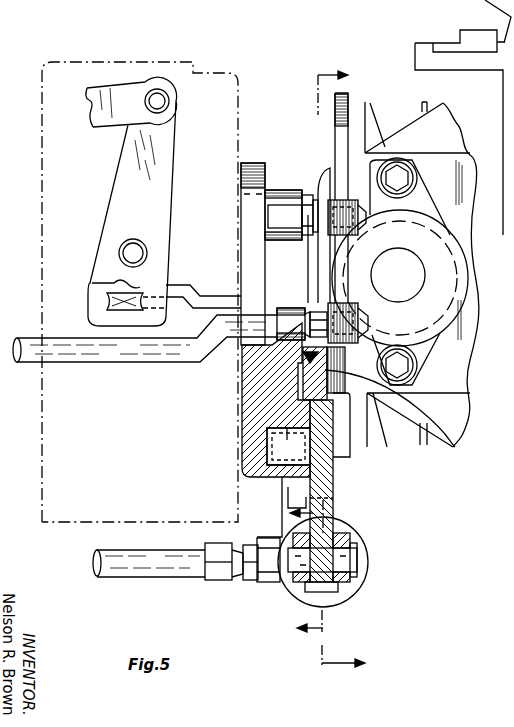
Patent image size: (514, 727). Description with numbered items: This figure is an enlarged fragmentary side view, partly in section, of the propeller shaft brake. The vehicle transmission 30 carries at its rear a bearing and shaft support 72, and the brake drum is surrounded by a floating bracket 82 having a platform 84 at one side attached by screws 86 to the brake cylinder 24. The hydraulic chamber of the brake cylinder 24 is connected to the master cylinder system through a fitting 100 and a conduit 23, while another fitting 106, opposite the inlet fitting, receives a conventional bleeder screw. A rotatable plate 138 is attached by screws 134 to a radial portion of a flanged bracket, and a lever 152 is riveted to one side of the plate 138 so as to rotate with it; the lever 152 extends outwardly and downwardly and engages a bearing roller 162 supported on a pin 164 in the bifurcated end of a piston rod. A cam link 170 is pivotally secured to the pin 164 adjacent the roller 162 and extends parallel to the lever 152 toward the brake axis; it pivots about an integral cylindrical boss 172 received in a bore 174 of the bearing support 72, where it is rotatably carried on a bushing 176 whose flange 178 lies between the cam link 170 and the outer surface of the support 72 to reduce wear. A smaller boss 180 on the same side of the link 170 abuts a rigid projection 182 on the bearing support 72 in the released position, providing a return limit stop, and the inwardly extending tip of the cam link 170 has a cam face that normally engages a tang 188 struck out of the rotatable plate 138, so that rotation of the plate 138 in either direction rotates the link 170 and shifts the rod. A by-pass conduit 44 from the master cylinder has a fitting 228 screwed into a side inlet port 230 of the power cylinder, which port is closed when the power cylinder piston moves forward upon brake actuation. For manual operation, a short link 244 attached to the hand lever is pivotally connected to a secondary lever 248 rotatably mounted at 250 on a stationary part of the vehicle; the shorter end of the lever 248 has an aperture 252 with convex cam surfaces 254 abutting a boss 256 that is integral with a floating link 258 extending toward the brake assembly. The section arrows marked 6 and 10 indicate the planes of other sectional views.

The section line 6- 6 is at (318, 569).
The section line 10- 10 is at (324, 371).
The conduit 23 is at (128, 352).
The brake cylinder 24 is at (442, 247).
The vehicle transmission 30 is at (44, 158).
The by-pass conduit 44 is at (140, 562).
The bearing and shaft support 72 is at (247, 405).
The floating bracket 82 is at (440, 133).
The platform 84 is at (476, 362).
The screws 86 is at (402, 183).
The fitting 100 is at (288, 313).
The fitting 106 is at (286, 238).
The screws 134 is at (362, 521).
The rotatable plate 138 is at (352, 454).
The lever 152 is at (327, 497).
The bearing roller 162 is at (359, 588).
The pin 164 is at (343, 562).
The cam link 170 is at (313, 588).
The cylindrical boss 172 is at (268, 448).
The bore 174 is at (287, 433).
The bushing 176 is at (282, 476).
The flange 178 is at (305, 468).
The smaller boss 180 is at (312, 498).
The rigid projection 182 is at (287, 498).
The tang 188 is at (388, 396).
The fitting 228 is at (223, 578).
The side inlet port 230 is at (268, 578).
The short link 244 is at (92, 107).
The secondary lever 248 is at (168, 140).
The rotatable mounting 250 is at (148, 257).
The aperture 252 is at (170, 293).
The convex cam surfaces 254 is at (95, 287).
The boss 256 is at (110, 306).
The floating link 258 is at (236, 270).